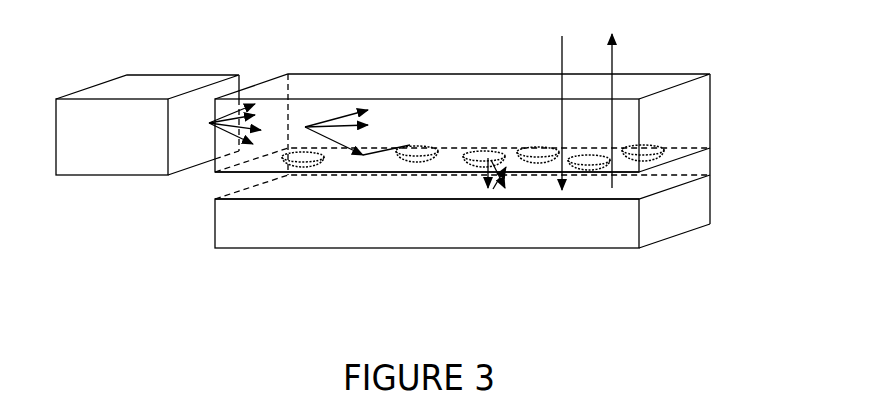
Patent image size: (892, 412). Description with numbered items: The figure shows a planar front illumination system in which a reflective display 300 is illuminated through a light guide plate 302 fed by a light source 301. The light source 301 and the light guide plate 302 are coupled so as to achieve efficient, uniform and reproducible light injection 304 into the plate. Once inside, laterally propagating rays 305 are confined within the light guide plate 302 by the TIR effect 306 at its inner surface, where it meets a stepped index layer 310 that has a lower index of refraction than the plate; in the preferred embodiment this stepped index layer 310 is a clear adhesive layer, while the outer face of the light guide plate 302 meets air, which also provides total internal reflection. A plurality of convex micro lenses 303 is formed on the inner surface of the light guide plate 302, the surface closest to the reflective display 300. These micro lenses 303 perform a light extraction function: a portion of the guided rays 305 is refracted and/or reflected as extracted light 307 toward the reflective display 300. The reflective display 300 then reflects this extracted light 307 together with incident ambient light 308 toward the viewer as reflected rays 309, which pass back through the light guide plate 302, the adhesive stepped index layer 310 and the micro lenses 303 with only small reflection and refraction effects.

The reflective display 300 is at (693, 209).
The light source 301 is at (137, 88).
The light guide plate 302 is at (700, 118).
The convex micro lenses 303 is at (306, 166).
The light injection 304 is at (218, 137).
The laterally propagating rays 305 is at (337, 108).
The TIR effect 306 is at (416, 146).
The extracted light 307 is at (512, 182).
The incident ambient light 308 is at (561, 52).
The reflected rays 309 is at (614, 52).
The stepped index layer 310 is at (695, 163).